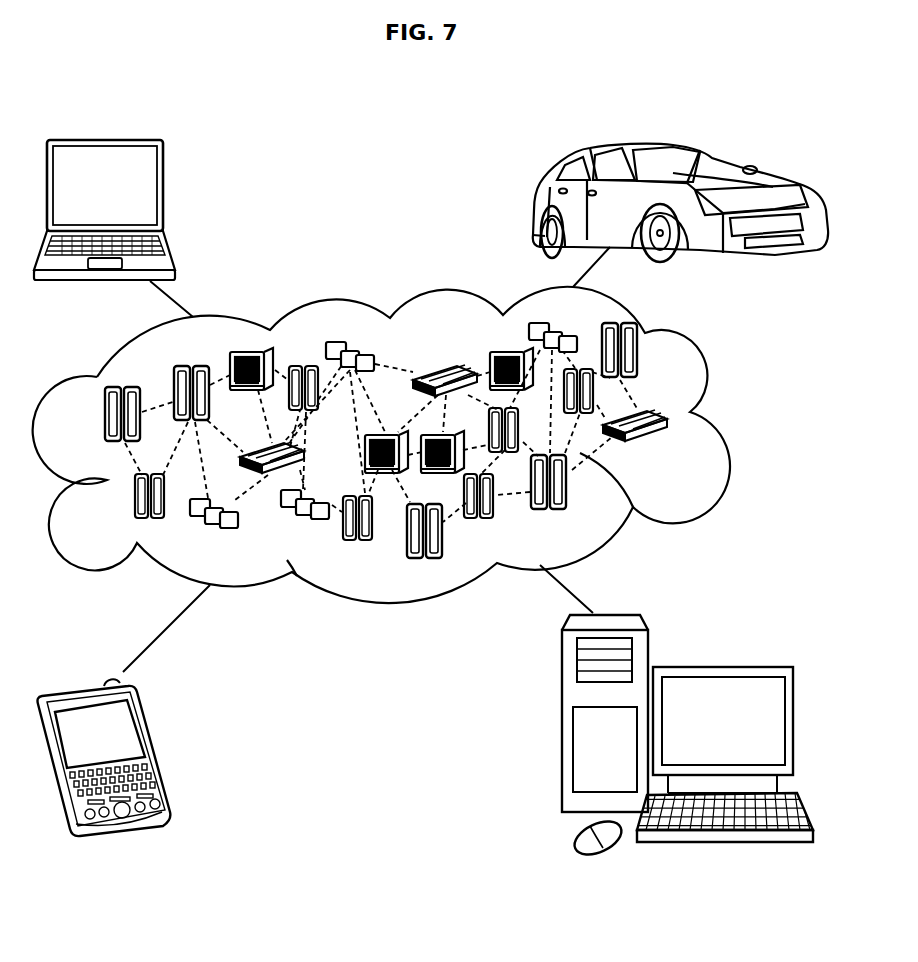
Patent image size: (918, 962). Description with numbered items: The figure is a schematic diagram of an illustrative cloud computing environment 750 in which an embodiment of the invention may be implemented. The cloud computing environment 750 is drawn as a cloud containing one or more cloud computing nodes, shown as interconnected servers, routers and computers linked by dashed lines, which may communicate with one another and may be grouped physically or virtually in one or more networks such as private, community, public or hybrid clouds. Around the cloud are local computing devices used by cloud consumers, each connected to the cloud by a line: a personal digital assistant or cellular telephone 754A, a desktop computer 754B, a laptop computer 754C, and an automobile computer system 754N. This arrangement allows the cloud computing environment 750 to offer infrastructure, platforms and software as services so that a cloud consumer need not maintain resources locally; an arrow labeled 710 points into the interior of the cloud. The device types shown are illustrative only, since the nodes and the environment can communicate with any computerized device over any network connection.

The cloud computing system 710 is at (672, 448).
The cloud computing environment 750 is at (722, 423).
The personal digital assistant (PDA) or cellular telephone 754A is at (155, 747).
The desktop computer 754B is at (730, 665).
The laptop computer 754C is at (163, 192).
The automobile computer system 754N is at (537, 207).